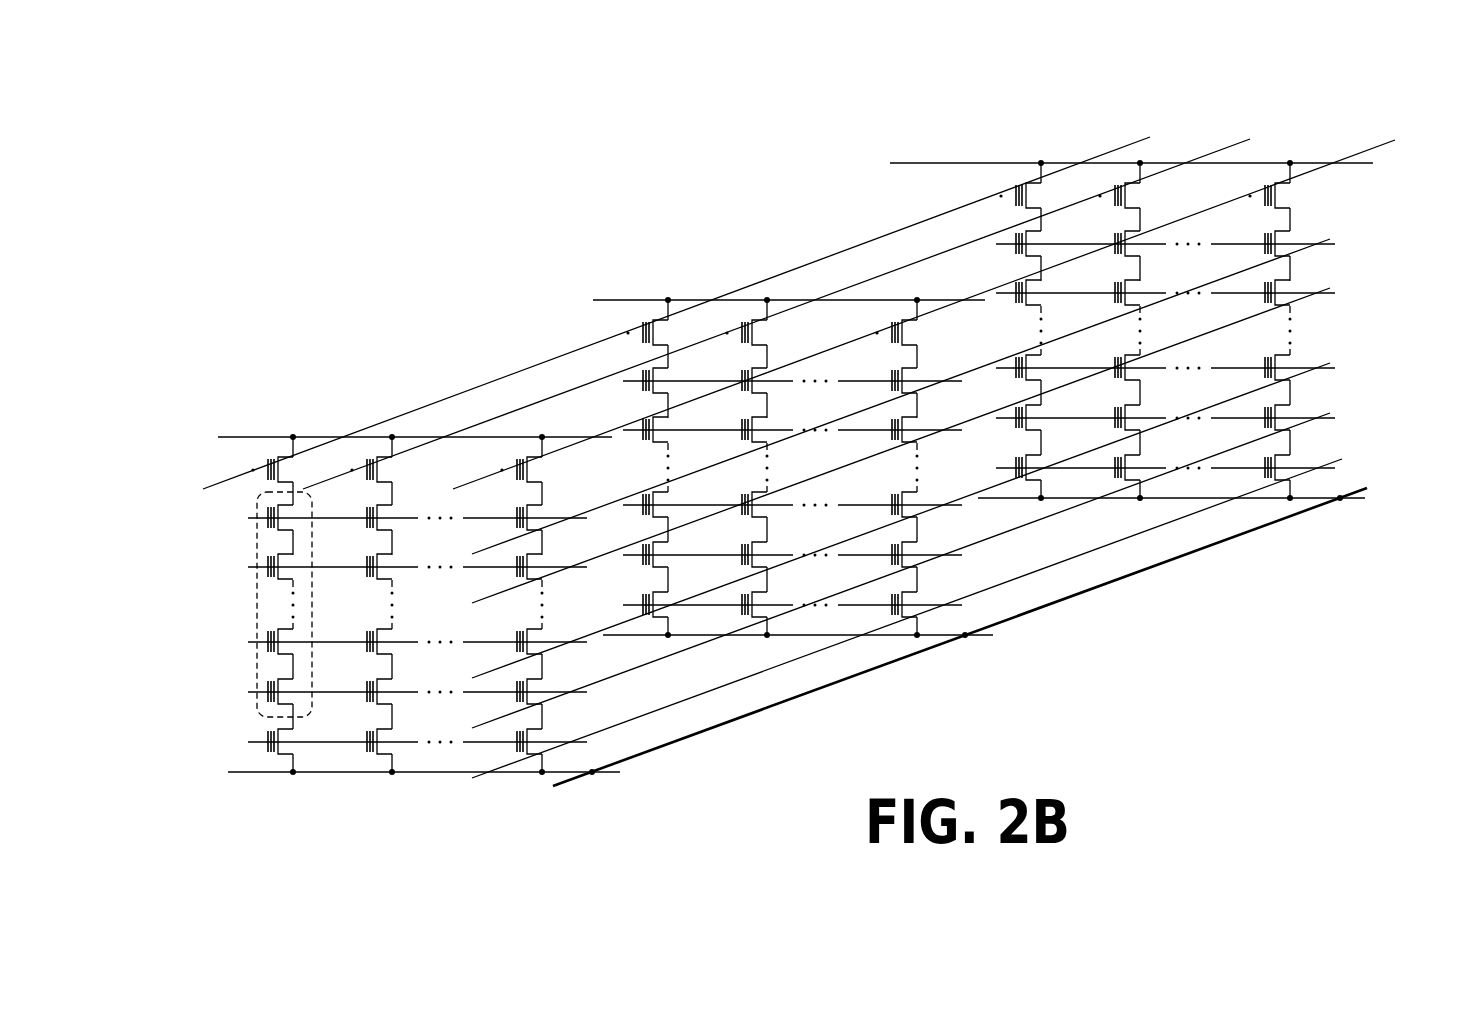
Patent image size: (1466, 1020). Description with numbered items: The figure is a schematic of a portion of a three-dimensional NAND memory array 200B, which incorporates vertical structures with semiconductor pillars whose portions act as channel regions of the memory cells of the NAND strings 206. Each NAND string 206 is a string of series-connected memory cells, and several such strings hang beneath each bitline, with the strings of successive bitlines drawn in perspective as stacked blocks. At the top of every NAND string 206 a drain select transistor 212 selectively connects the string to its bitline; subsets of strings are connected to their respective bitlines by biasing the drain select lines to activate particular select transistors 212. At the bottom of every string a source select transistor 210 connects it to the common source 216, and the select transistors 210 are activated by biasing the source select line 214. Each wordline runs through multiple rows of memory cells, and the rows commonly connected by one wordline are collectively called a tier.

The three-dimensional NAND memory array 200B is at (604, 110).
The select transistor 212 is at (283, 457).
The NAND string 206 is at (226, 548).
The select transistor 210 is at (290, 758).
The select line 214 is at (1180, 515).
The common source 216 is at (1013, 623).